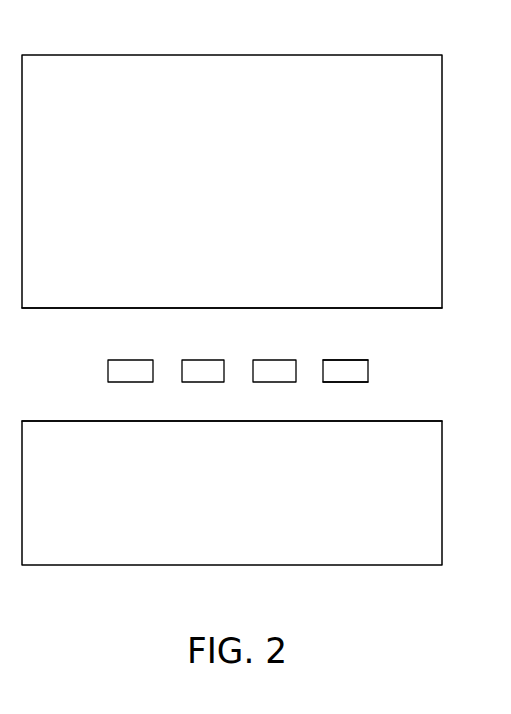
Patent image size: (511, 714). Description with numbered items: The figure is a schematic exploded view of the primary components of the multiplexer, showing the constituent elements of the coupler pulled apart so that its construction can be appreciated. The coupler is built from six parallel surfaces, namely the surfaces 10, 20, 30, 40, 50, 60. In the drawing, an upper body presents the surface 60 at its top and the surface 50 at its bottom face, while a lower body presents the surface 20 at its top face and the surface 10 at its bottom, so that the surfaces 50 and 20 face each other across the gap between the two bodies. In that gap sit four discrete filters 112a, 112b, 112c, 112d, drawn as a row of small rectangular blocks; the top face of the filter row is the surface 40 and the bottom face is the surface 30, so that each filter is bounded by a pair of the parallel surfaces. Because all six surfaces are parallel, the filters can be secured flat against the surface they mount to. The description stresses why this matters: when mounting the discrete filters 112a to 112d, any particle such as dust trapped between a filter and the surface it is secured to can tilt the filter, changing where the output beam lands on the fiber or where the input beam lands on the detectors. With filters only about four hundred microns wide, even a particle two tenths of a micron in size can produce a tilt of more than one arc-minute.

The surface 10 is at (434, 565).
The surface 20 is at (440, 421).
The surface 30 is at (357, 382).
The surface 40 is at (355, 360).
The surface 50 is at (439, 308).
The surface 60 is at (441, 55).
The discrete filter 112a is at (116, 360).
The discrete filter 112b is at (189, 360).
The discrete filter 112c is at (261, 360).
The discrete filter 112d is at (332, 360).